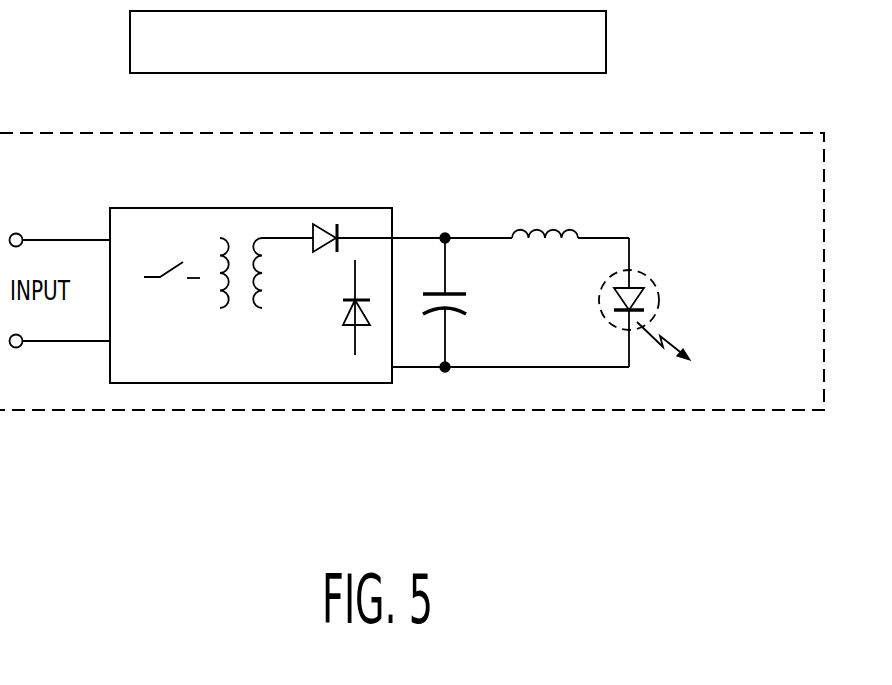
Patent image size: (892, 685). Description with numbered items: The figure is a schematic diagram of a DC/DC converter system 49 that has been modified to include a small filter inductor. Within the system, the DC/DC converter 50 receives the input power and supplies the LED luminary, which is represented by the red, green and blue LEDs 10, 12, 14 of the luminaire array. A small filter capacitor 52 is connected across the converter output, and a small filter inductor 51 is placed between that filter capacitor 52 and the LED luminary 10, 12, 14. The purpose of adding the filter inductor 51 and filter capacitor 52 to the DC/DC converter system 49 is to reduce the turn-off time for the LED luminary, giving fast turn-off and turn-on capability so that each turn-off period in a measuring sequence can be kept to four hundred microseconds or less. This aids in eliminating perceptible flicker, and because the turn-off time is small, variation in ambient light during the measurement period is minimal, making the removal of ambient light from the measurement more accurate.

The DC/DC converter system 49 is at (130, 42).
The DC/DC converter 50 is at (152, 249).
The filter inductor 51 is at (543, 226).
The filter capacitor 52 is at (457, 293).
The red LEDs 10 is at (698, 270).
The green LEDs 12 is at (698, 285).
The blue LEDs 14 is at (638, 274).